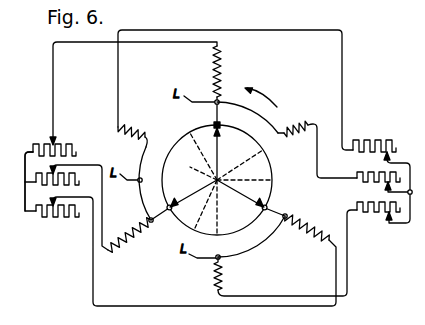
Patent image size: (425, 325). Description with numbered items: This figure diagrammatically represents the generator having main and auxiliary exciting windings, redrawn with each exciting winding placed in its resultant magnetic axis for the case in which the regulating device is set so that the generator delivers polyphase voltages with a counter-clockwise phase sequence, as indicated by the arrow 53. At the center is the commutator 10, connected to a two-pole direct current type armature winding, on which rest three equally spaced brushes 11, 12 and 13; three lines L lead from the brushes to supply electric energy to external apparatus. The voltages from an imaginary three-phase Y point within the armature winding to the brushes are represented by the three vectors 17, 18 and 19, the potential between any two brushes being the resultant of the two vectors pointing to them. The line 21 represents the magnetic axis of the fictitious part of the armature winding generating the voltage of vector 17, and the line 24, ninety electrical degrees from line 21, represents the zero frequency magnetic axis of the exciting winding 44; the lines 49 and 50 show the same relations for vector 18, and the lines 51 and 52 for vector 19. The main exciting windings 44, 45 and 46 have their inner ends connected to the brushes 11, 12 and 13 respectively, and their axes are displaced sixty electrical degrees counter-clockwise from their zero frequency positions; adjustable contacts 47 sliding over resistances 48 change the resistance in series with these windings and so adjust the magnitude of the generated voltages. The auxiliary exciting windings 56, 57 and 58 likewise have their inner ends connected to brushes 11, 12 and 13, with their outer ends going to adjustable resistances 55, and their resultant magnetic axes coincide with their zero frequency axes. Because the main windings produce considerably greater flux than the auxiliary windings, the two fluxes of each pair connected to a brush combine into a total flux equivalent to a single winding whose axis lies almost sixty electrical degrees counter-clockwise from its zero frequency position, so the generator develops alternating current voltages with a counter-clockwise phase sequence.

The commutator 10 is at (269, 158).
The brush 11 is at (213, 119).
The brush 12 is at (268, 207).
The brush 13 is at (170, 211).
The voltage vector 17 is at (218, 150).
The voltage vector 18 is at (195, 192).
The voltage vector 19 is at (230, 189).
The magnetic axis line 21 is at (199, 153).
The zero frequency magnetic axis line 24 is at (241, 165).
The exciting winding 44 is at (221, 79).
The exciting winding 45 is at (306, 236).
The exciting winding 46 is at (128, 232).
The adjustable contacts 47 is at (56, 141).
The resistances 48 is at (45, 144).
The magnetic axis line 49 is at (204, 208).
The zero frequency magnetic axis line 50 is at (189, 167).
The magnetic axis line 51 is at (244, 177).
The zero frequency magnetic axis line 52 is at (219, 209).
The arrow 53 is at (261, 92).
The adjustable resistances 55 is at (375, 138).
The exciting winding 56 is at (295, 124).
The exciting winding 57 is at (213, 277).
The exciting winding 58 is at (135, 129).